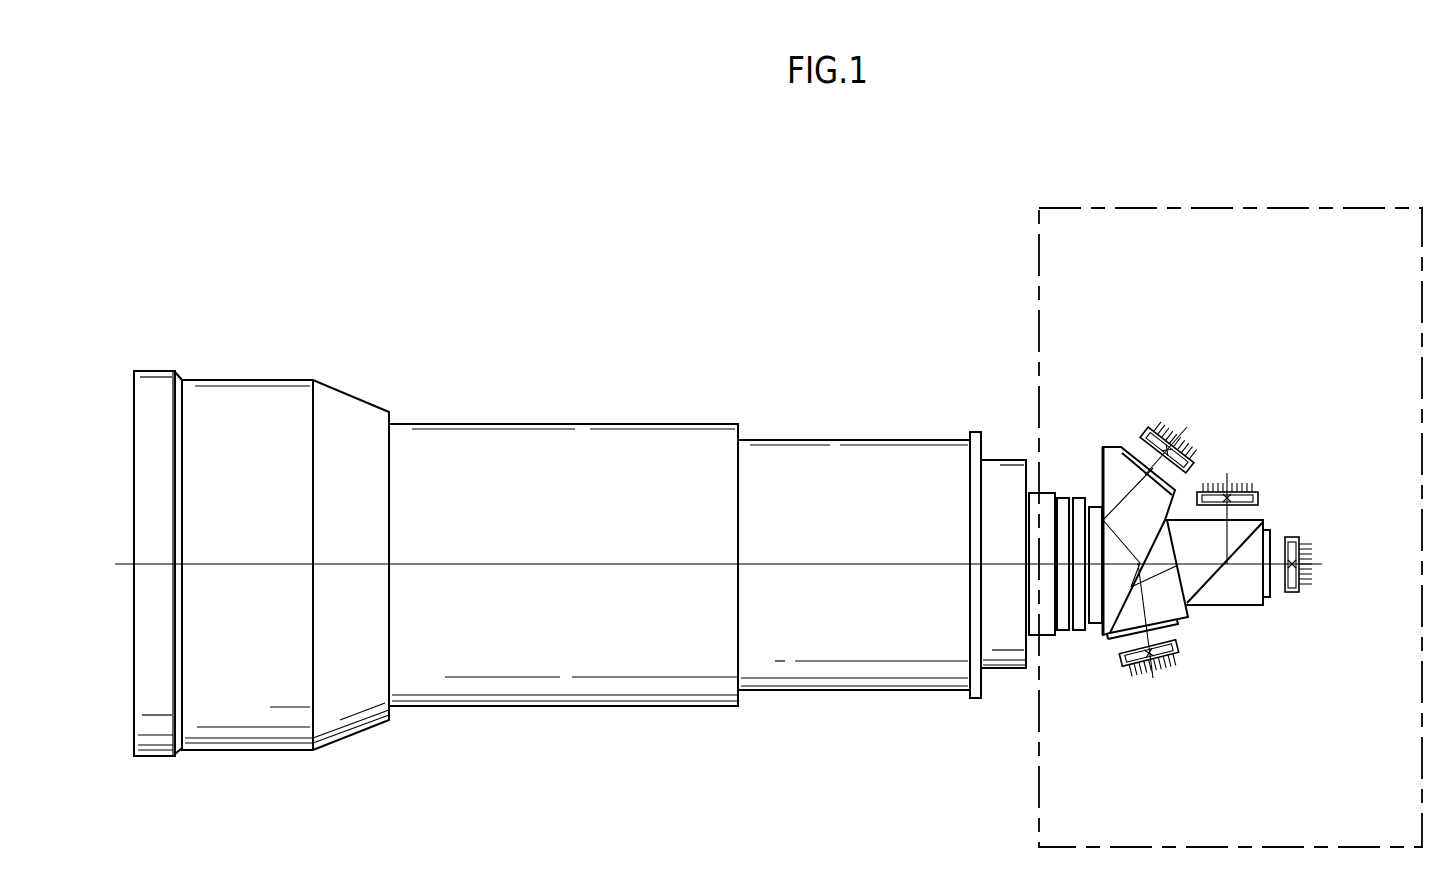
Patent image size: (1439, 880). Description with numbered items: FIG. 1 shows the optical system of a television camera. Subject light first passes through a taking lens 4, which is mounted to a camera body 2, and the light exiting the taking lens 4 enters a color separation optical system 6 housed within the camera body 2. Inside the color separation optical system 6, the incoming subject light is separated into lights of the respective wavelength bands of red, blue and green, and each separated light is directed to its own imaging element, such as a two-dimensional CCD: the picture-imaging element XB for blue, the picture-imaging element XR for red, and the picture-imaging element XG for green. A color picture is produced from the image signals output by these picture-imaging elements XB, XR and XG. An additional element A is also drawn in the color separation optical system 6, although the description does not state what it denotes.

The camera body 2 is at (1230, 507).
The taking lens 4 is at (1038, 300).
The color separation optical system 6 is at (1317, 300).
The picture-imaging element XB is at (1147, 433).
The picture-imaging element XR is at (1176, 648).
The picture-imaging element XG is at (1293, 594).
The optical element A is at (1259, 498).